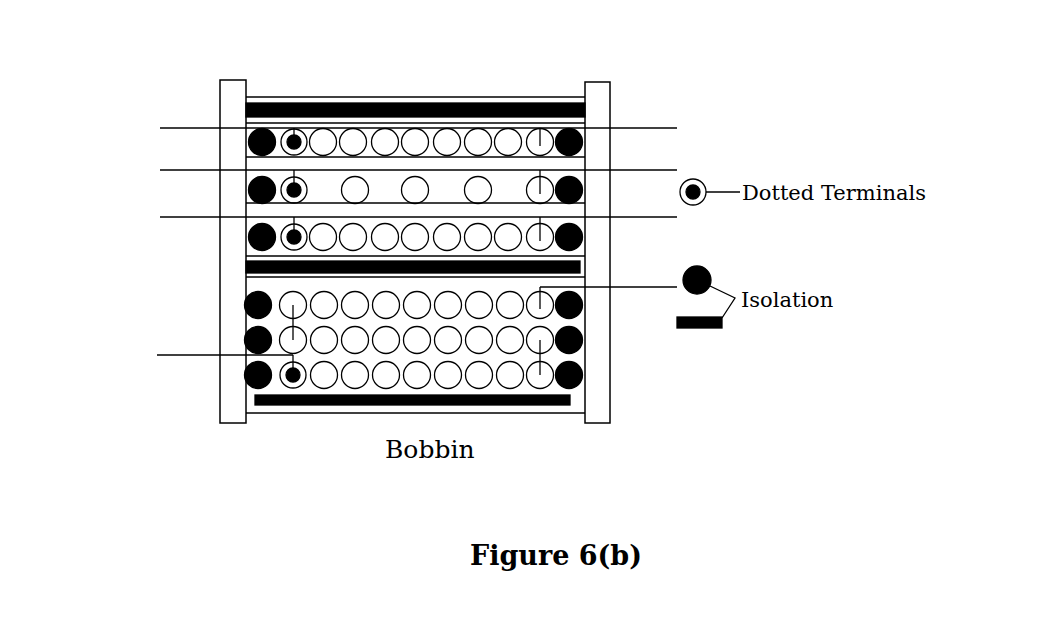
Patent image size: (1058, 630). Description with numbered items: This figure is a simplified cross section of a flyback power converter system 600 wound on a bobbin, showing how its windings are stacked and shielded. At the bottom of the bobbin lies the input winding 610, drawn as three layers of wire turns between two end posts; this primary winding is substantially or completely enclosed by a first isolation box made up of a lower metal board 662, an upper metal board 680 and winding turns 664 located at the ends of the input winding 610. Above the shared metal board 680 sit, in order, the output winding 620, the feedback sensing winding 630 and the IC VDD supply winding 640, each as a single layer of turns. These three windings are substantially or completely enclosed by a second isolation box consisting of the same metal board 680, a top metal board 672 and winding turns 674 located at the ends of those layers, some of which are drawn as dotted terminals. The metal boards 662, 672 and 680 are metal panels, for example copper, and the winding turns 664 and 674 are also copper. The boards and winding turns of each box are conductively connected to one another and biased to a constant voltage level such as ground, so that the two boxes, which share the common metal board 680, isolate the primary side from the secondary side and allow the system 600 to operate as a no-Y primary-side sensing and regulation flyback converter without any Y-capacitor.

The flyback power converter system 600 is at (89, 46).
The input winding 610 is at (167, 357).
The output winding 620 is at (168, 217).
The feedback sensing winding 630 is at (165, 169).
The IC VDD supply winding 640 is at (178, 128).
The metal board 662 is at (562, 423).
The winding turns 664 is at (243, 317).
The metal board 672 is at (405, 103).
The winding turns 674 is at (244, 235).
The metal board 680 is at (580, 265).